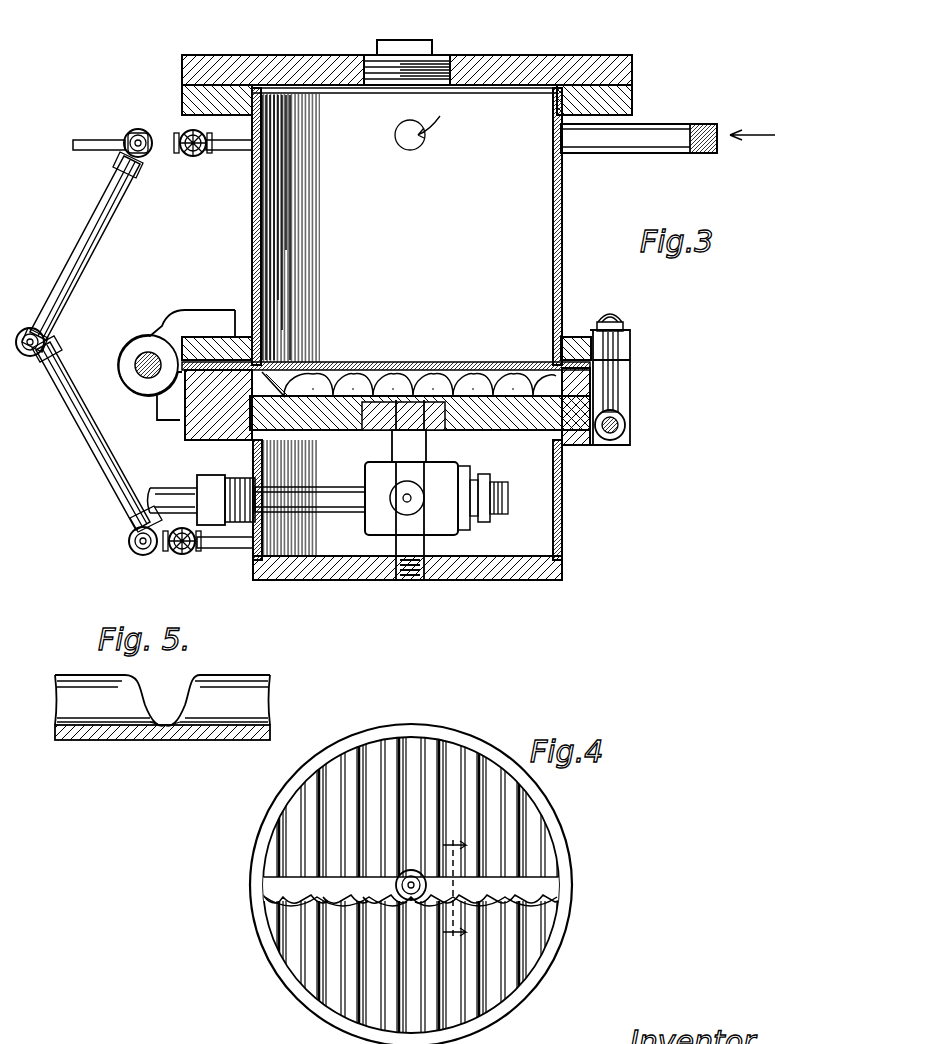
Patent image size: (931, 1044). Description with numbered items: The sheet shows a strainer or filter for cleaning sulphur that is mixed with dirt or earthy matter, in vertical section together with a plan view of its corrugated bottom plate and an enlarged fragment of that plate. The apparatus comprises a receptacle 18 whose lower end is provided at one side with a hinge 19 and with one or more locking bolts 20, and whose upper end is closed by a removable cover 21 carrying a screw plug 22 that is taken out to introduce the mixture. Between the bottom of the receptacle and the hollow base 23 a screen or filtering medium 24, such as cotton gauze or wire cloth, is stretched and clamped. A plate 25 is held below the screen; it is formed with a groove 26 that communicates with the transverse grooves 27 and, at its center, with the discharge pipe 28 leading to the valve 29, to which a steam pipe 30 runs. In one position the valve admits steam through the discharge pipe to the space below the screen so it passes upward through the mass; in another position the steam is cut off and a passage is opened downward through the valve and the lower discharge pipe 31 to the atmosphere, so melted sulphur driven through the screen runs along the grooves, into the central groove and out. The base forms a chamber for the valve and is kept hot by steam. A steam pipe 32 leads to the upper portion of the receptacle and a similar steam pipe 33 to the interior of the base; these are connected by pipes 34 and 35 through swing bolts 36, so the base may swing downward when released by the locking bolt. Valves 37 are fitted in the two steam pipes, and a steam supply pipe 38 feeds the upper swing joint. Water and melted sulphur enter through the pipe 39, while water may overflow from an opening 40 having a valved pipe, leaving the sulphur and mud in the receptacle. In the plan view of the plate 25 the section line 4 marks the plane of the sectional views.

In FIG. 4, the section line 4- 4 is at (454, 886).
In FIG. 3, the receptacle 18 is at (252, 233).
In FIG. 3, the hinge 19 is at (140, 350).
In FIG. 3, the locking bolt 20 is at (628, 348).
In FIG. 3, the removable cover 21 is at (572, 58).
In FIG. 3, the screw plug 22 is at (440, 58).
In FIG. 3, the base 23 is at (205, 410).
In FIG. 3, the screen or filtering medium 24 is at (332, 366).
In FIG. 3, the plate 25 is at (365, 402).
In FIG. 5, the plate 25 is at (68, 738).
In FIG. 4, the plate 25 is at (270, 808).
In FIG. 3, the groove 26 is at (510, 378).
In FIG. 5, the groove 26 is at (170, 706).
In FIG. 4, the groove 26 is at (282, 887).
In FIG. 3, the transverse grooves 27 is at (470, 366).
In FIG. 5, the transverse grooves 27 is at (162, 700).
In FIG. 4, the transverse grooves 27 is at (500, 812).
In FIG. 3, the discharge pipe 28 is at (426, 444).
In FIG. 3, the valve 29 is at (374, 525).
In FIG. 3, the steam pipe 30 is at (320, 500).
In FIG. 3, the lower discharge pipe 31 is at (412, 582).
In FIG. 3, the steam pipe 32 is at (234, 152).
In FIG. 3, the steam pipe 33 is at (222, 550).
In FIG. 3, the pipe 34 is at (75, 250).
In FIG. 3, the pipe 35 is at (78, 445).
In FIG. 3, the swing bolts 36 is at (136, 168).
In FIG. 3, the valves 37 is at (182, 136).
In FIG. 3, the steam supply pipe 38 is at (86, 140).
In FIG. 3, the pipe 39 is at (700, 124).
In FIG. 3, the opening 40 is at (408, 150).